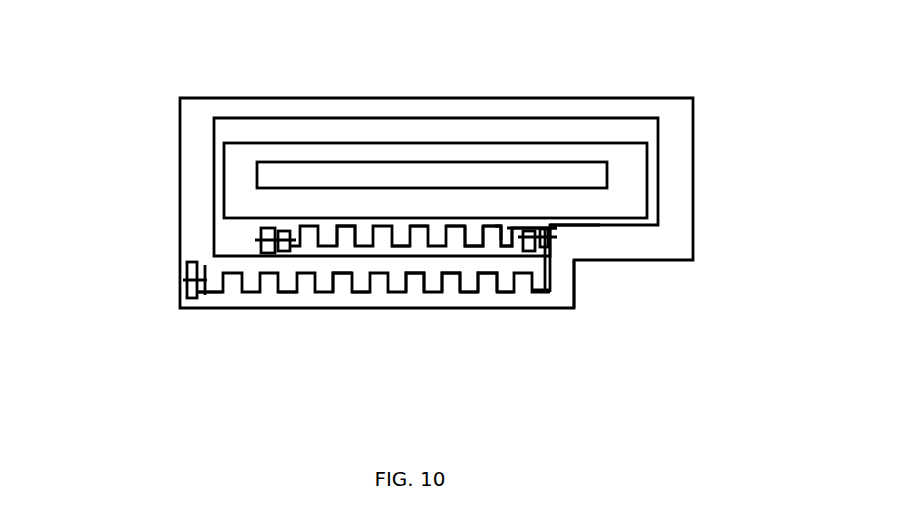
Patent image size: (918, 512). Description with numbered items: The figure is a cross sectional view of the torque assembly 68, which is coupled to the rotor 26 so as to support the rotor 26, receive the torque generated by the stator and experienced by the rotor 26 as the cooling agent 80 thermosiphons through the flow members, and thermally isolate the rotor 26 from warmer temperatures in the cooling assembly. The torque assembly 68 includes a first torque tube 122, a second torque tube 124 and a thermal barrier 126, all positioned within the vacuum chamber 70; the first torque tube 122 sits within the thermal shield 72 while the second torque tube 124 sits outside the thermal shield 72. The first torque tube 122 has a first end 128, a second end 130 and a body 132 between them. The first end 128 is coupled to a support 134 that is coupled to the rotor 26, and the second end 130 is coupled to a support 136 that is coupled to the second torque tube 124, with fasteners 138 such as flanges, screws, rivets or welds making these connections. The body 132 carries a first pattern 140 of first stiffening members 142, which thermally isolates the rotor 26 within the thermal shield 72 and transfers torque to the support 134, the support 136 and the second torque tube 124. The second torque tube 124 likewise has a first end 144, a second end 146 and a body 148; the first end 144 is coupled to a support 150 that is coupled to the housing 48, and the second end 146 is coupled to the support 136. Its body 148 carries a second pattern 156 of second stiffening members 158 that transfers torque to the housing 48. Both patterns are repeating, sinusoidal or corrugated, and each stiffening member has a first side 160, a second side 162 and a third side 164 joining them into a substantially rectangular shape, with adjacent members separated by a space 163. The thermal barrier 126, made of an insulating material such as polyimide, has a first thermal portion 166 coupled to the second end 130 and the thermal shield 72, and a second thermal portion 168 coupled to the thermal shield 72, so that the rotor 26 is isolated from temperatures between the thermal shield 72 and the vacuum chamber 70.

The torque assembly 68 is at (120, 98).
The vacuum chamber 70 is at (693, 99).
The thermal shield 72 is at (658, 128).
The rotor 26 is at (236, 180).
The first end 128 is at (290, 247).
The body 132 is at (347, 224).
The first pattern 140 is at (403, 224).
The first stiffening members 142 is at (448, 222).
The first side 160 is at (428, 222).
The third side 164 is at (482, 238).
The second side 162 is at (495, 221).
The space 163 is at (512, 237).
The first torque tube 122 is at (502, 225).
The second end 130 is at (528, 222).
The first thermal portion 166 is at (533, 220).
The second thermal portion 168 is at (543, 221).
The support 134 is at (268, 227).
The fasteners 138 is at (262, 240).
The support 136 is at (530, 245).
The second end 146 is at (528, 275).
The housing 48 is at (185, 293).
The first end 144 is at (200, 298).
The support 150 is at (193, 298).
The second torque tube 124 is at (215, 304).
The second pattern 156 is at (285, 304).
The second stiffening members 158 is at (326, 298).
The body 148 is at (361, 293).
The cooling agent 80 is at (507, 292).
The thermal barrier 126 is at (570, 264).